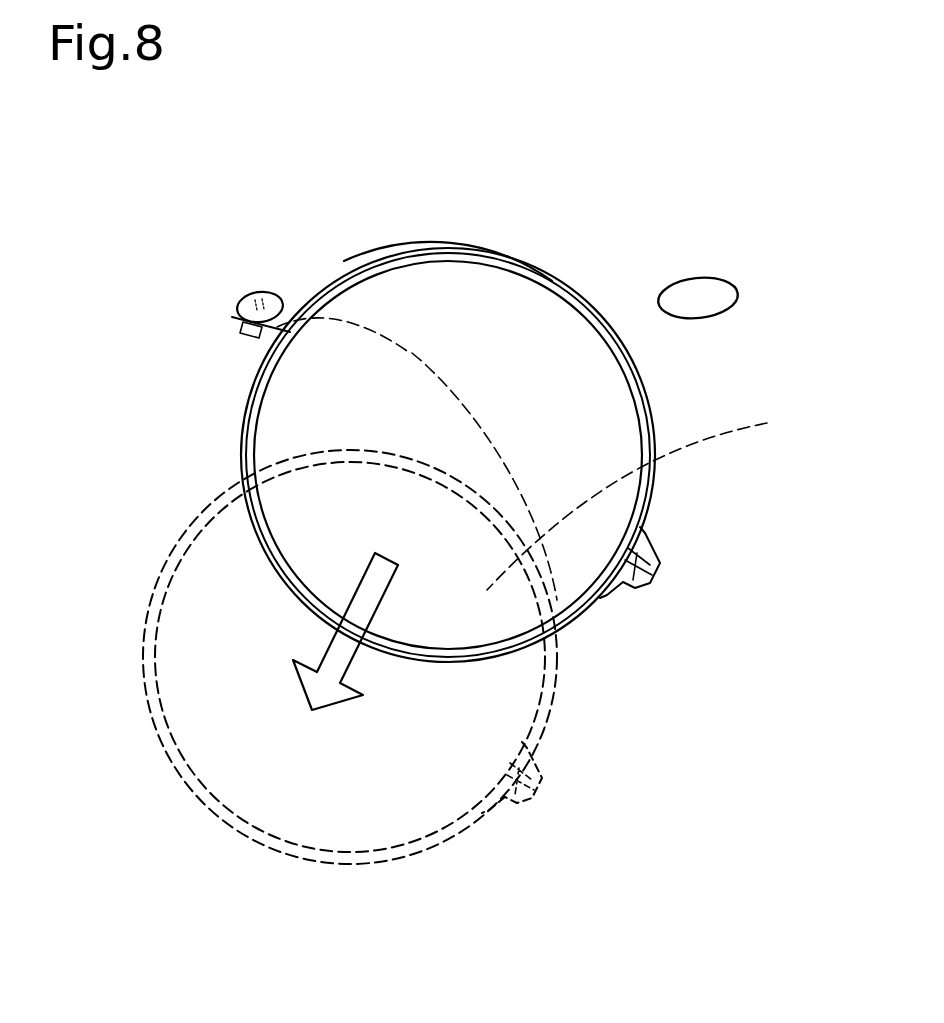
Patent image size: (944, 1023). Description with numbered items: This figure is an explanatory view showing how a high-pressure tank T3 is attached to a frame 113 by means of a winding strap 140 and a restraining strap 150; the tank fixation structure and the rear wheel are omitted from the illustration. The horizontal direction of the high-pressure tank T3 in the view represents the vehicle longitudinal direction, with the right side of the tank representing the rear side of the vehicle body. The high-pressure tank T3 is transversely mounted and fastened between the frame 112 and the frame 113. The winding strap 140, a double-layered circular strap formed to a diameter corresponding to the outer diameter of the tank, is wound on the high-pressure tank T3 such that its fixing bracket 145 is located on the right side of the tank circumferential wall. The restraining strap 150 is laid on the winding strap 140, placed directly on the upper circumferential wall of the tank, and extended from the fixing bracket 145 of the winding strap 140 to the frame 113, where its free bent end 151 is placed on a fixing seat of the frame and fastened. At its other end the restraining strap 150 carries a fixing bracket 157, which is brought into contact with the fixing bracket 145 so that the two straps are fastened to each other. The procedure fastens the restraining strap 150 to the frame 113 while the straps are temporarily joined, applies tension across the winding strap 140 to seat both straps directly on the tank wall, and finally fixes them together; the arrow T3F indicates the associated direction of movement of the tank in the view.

The frame 112 is at (702, 288).
The frame 113 is at (249, 290).
The winding strap 140 is at (242, 432).
The fixing bracket 145 is at (622, 590).
The restraining strap 150 is at (410, 353).
The bent end 151 is at (236, 322).
The fixing bracket 157 is at (650, 543).
The high-pressure tank T3 is at (588, 430).
The movement direction T3F is at (338, 652).